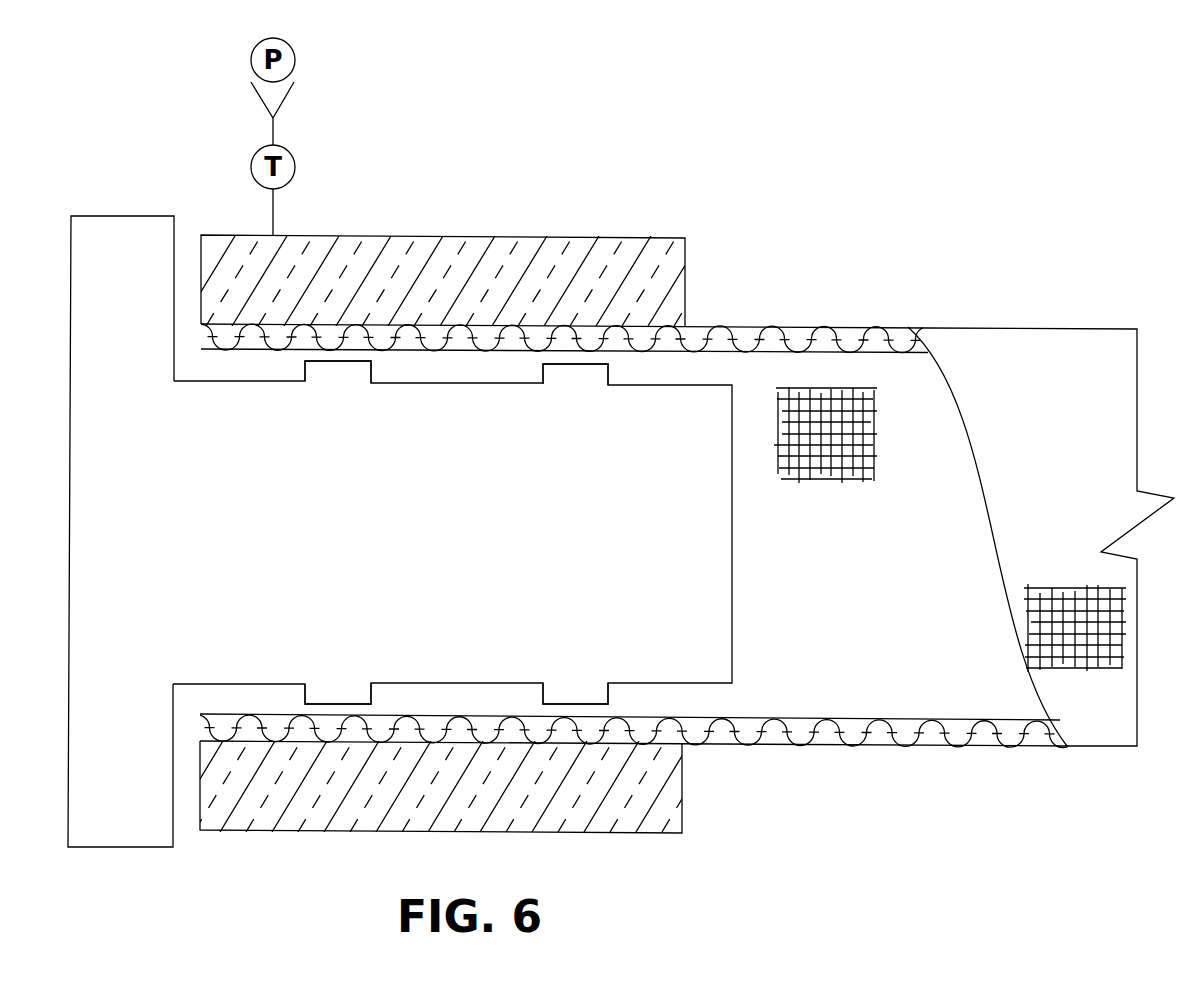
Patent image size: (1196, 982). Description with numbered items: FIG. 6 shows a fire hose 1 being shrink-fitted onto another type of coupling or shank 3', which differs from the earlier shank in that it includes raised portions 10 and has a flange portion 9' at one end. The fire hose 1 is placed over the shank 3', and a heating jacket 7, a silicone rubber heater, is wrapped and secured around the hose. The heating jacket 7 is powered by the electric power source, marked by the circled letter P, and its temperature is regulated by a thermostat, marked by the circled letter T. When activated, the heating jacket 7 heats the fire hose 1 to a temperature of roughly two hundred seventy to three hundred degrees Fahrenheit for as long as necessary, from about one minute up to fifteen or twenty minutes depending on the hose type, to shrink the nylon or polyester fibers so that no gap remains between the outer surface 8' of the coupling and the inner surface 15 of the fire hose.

The fire hose 1 is at (1012, 327).
The coupling or shank 3' is at (474, 588).
The heating jacket 7 is at (380, 235).
The outer surface of the coupling 8' is at (488, 259).
The flange portion 9' is at (147, 554).
The raised portions 10 is at (705, 826).
The inner surface of the fire hose 15 is at (887, 355).